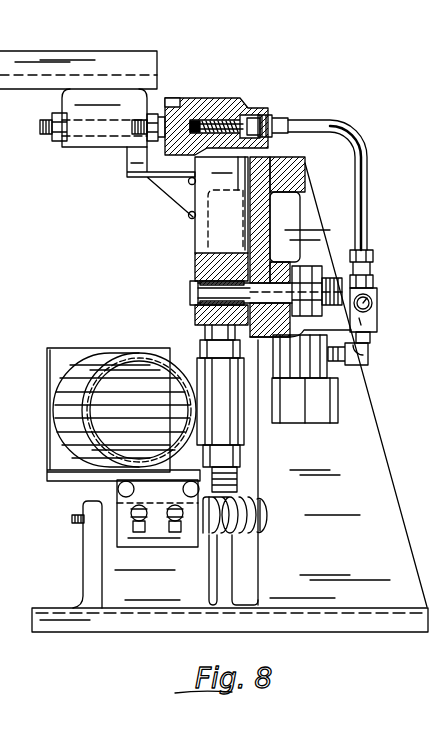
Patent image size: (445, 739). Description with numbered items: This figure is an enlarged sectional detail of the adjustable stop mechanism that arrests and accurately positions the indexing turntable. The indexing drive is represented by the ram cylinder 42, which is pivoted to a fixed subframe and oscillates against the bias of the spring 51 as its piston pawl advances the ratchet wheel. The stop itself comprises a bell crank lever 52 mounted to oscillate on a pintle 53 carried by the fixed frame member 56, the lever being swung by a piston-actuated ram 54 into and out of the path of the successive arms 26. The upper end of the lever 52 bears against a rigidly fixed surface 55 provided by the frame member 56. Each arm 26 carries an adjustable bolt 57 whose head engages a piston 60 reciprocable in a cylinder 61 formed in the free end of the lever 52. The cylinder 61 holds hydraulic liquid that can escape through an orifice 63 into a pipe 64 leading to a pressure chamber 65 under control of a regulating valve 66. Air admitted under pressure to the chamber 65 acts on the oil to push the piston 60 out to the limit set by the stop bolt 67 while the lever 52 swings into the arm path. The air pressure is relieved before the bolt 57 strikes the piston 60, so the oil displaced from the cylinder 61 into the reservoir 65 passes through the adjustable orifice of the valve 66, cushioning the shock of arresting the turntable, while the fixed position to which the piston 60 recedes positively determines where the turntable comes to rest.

The arm 26 is at (110, 57).
The adjustable bolt 57 is at (44, 126).
The piston 60 is at (190, 108).
The cylinder 61 is at (207, 118).
The stop bolt 67 is at (212, 124).
The orifice 63 is at (241, 119).
The rigidly fixed surface 55 is at (268, 166).
The pipe 64 is at (352, 142).
The fixed frame member 56 is at (280, 237).
The bell crank lever 52 is at (200, 240).
The pintle 53 is at (205, 295).
The regulating valve 66 is at (377, 314).
The pressure chamber 65 is at (338, 378).
The ram cylinder 42 is at (95, 356).
The piston-actuated ram 54 is at (245, 440).
The spring 51 is at (250, 500).